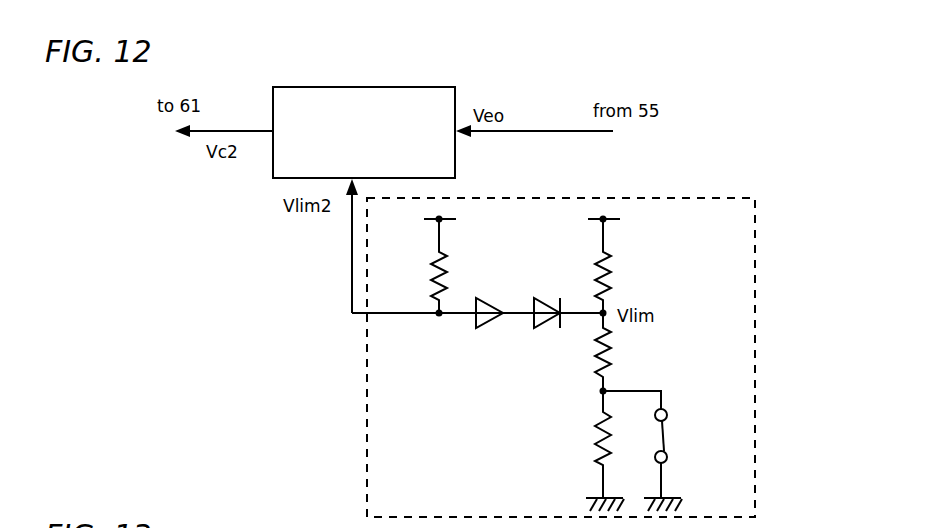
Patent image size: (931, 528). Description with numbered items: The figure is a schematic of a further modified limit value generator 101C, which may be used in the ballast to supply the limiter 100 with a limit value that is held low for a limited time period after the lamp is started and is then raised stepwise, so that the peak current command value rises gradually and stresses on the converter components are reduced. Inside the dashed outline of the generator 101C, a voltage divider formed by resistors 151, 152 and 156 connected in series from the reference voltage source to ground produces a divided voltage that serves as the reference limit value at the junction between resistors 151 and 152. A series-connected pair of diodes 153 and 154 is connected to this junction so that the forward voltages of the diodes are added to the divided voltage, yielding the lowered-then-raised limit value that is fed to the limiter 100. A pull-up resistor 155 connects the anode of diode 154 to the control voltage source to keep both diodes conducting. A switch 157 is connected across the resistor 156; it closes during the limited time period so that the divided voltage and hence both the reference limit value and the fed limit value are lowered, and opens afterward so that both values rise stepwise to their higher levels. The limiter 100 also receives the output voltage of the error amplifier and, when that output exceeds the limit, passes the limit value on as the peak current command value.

The limiter 100 is at (364, 132).
The limit value generator 101C is at (755, 200).
The resistor 151 is at (617, 280).
The resistor 152 is at (618, 350).
The diode 153 is at (546, 334).
The diode 154 is at (490, 332).
The pull-up resistor 155 is at (428, 283).
The resistor 156 is at (589, 431).
The switch 157 is at (678, 432).